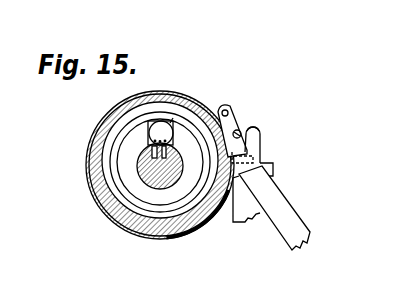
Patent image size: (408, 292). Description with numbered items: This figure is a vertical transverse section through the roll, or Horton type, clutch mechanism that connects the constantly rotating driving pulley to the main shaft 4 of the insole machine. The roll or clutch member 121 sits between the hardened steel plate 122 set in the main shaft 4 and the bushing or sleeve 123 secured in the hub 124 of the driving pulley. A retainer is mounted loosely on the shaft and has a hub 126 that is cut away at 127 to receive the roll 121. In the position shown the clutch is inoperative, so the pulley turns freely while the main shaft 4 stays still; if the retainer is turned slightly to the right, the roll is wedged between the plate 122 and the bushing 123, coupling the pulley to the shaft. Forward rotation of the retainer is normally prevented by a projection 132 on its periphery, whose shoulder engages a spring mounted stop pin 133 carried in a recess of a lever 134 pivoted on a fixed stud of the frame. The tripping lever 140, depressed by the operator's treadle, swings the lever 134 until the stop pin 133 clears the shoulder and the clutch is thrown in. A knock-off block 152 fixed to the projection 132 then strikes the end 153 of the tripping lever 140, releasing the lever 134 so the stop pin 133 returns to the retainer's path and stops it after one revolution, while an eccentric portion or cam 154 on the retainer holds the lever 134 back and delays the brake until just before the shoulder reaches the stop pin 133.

The main shaft 4 is at (147, 182).
The roll or clutch member 121 is at (160, 133).
The hardened steel plate 122 is at (150, 150).
The bushing or sleeve 123 is at (153, 113).
The hub 124 is at (167, 228).
The hub of retainer 126 is at (130, 174).
The cut-away portion 127 is at (173, 118).
The projection 132 is at (244, 153).
The stop pin 133 is at (273, 171).
The lever 134 is at (246, 200).
The tripping lever 140 is at (301, 233).
The knock-off block 152 is at (235, 122).
The end of tripping lever 153 is at (258, 139).
The eccentric portion or cam 154 is at (140, 231).